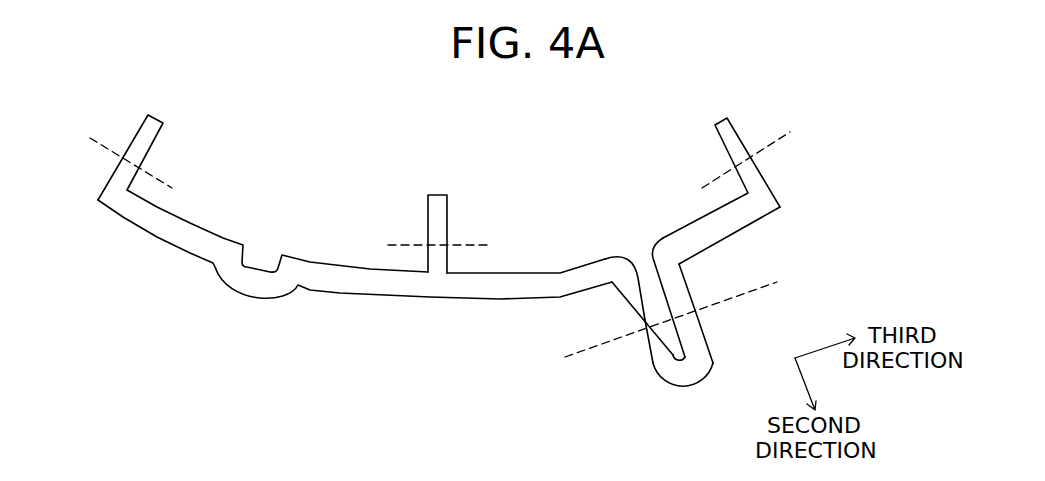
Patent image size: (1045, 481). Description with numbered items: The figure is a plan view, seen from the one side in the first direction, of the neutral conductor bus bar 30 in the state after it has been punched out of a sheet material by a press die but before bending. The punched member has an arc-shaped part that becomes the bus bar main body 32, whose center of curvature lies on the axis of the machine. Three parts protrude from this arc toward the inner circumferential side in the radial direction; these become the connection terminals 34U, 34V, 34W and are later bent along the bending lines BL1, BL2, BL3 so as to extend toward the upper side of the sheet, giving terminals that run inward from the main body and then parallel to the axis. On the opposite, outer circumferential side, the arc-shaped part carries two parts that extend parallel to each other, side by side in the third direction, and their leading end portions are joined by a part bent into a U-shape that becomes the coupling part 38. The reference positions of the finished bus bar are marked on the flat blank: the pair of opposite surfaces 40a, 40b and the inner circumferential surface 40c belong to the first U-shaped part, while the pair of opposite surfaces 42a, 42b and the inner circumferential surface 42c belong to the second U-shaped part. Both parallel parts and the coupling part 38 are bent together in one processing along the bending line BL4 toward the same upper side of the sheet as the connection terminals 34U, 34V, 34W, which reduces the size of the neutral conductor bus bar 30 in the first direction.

The neutral conductor bus bar 30 is at (437, 152).
The bus bar main body 32 is at (362, 287).
The connection terminal 34U is at (148, 137).
The connection terminal 34V is at (440, 213).
The connection terminal 34W is at (732, 143).
The coupling part 38 is at (688, 385).
The opposite surface 40a is at (633, 295).
The opposite surface 40b is at (650, 358).
The inner circumferential surface 40c is at (655, 352).
The opposite surface 42a is at (677, 287).
The opposite surface 42b is at (697, 342).
The inner circumferential surface 42c is at (695, 321).
The bending line BL1 is at (153, 171).
The bending line BL2 is at (460, 247).
The bending line BL3 is at (768, 156).
The bending line BL4 is at (648, 327).